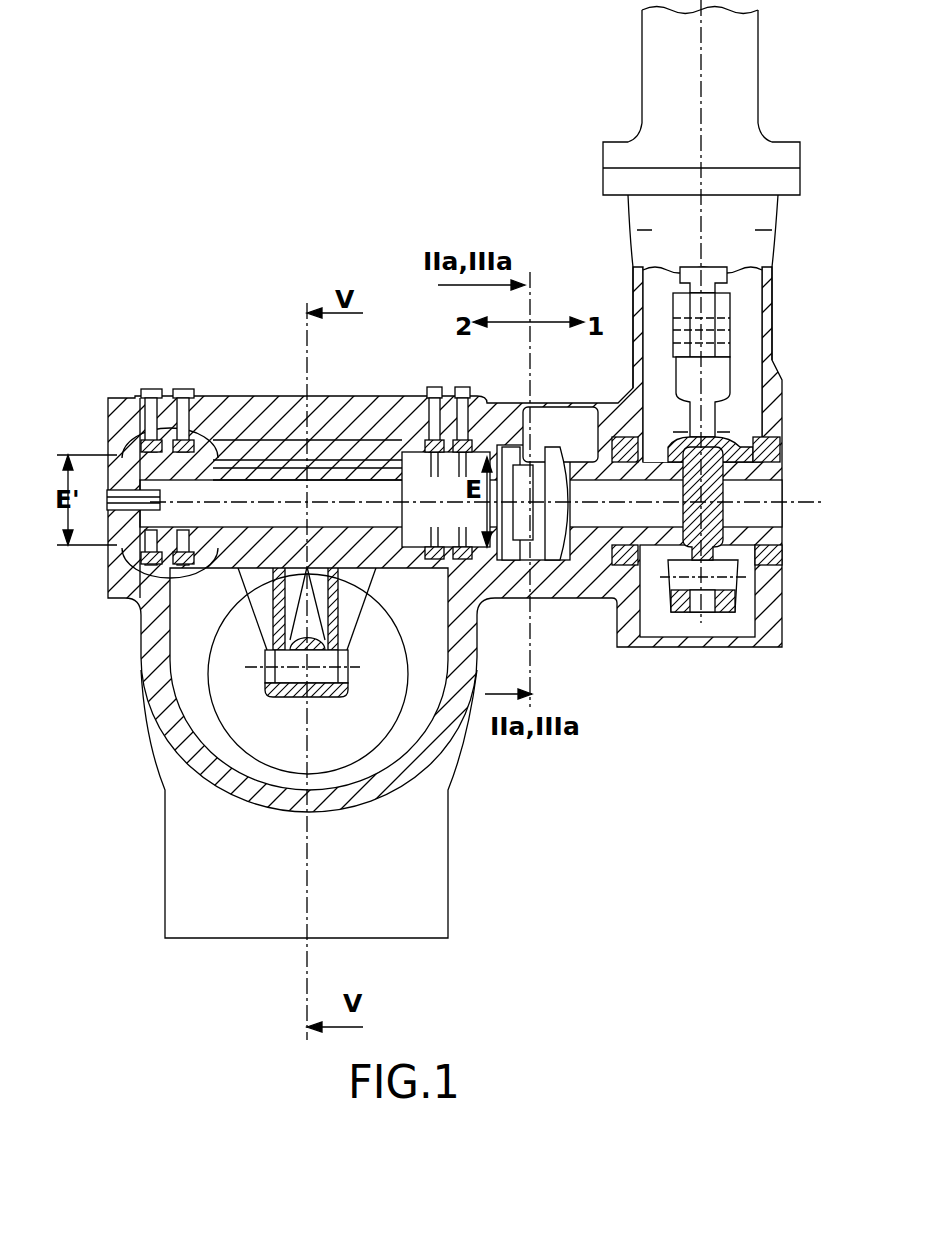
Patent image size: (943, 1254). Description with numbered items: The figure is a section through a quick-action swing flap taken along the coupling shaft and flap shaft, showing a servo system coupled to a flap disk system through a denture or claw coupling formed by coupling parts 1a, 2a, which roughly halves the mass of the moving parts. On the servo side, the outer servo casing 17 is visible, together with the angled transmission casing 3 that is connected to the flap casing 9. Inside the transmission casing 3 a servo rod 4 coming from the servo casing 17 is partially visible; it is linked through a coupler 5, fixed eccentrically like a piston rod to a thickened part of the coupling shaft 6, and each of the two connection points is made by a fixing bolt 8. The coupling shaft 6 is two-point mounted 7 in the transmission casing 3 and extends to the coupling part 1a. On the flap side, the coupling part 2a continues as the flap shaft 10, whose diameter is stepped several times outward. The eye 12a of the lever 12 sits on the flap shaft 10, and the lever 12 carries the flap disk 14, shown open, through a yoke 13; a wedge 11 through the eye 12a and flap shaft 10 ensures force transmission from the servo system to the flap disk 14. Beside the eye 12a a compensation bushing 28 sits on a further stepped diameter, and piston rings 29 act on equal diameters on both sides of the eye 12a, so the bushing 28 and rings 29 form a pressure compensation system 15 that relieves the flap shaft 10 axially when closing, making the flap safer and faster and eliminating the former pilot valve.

The coupling part 1a is at (540, 548).
The coupling part 2a is at (490, 572).
The transmission casing 3 is at (763, 327).
The servo rod 4 is at (740, 267).
The coupler 5 is at (717, 375).
The coupling shaft 6 is at (723, 443).
The two-point mounting 7 is at (770, 455).
The fixing bolt 8 is at (722, 320).
The flap casing 9 is at (415, 753).
The flap shaft 10 is at (275, 517).
The wedge 11 is at (177, 398).
The lever 12 is at (333, 610).
The eye 12a is at (222, 408).
The yoke 13 is at (287, 672).
The flap disk 14 is at (336, 746).
The pressure compensation system 15 is at (145, 432).
The servo casing 17 is at (728, 67).
The compensation bushing 28 is at (127, 487).
The piston rings 29 is at (400, 420).